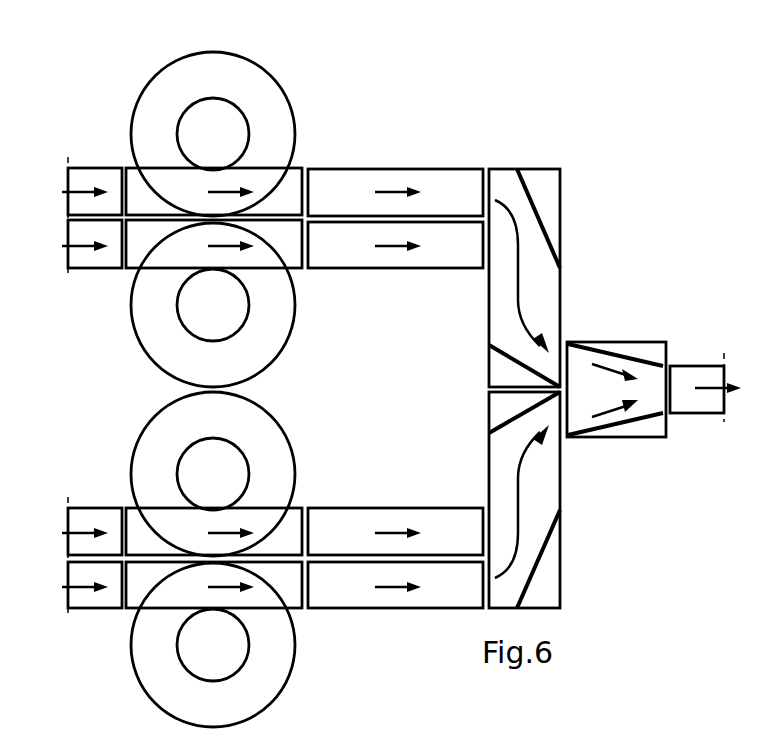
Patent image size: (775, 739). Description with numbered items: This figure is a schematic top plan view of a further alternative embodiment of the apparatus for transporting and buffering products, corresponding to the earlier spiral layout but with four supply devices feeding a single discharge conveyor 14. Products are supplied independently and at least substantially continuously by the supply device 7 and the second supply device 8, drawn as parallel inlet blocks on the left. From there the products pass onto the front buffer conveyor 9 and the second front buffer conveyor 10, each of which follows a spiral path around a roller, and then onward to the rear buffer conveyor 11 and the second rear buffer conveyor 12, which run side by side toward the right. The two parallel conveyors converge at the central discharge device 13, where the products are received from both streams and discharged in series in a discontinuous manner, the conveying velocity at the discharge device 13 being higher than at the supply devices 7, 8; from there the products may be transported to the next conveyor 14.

The supply device 7 is at (90, 180).
The second supply device 8 is at (100, 257).
The front buffer conveyor 9 is at (282, 113).
The second front buffer conveyor 10 is at (282, 325).
The rear buffer conveyor 11 is at (450, 177).
The second rear buffer conveyor 12 is at (433, 257).
The discharge device 13 is at (503, 178).
The next conveyor 14 is at (699, 375).